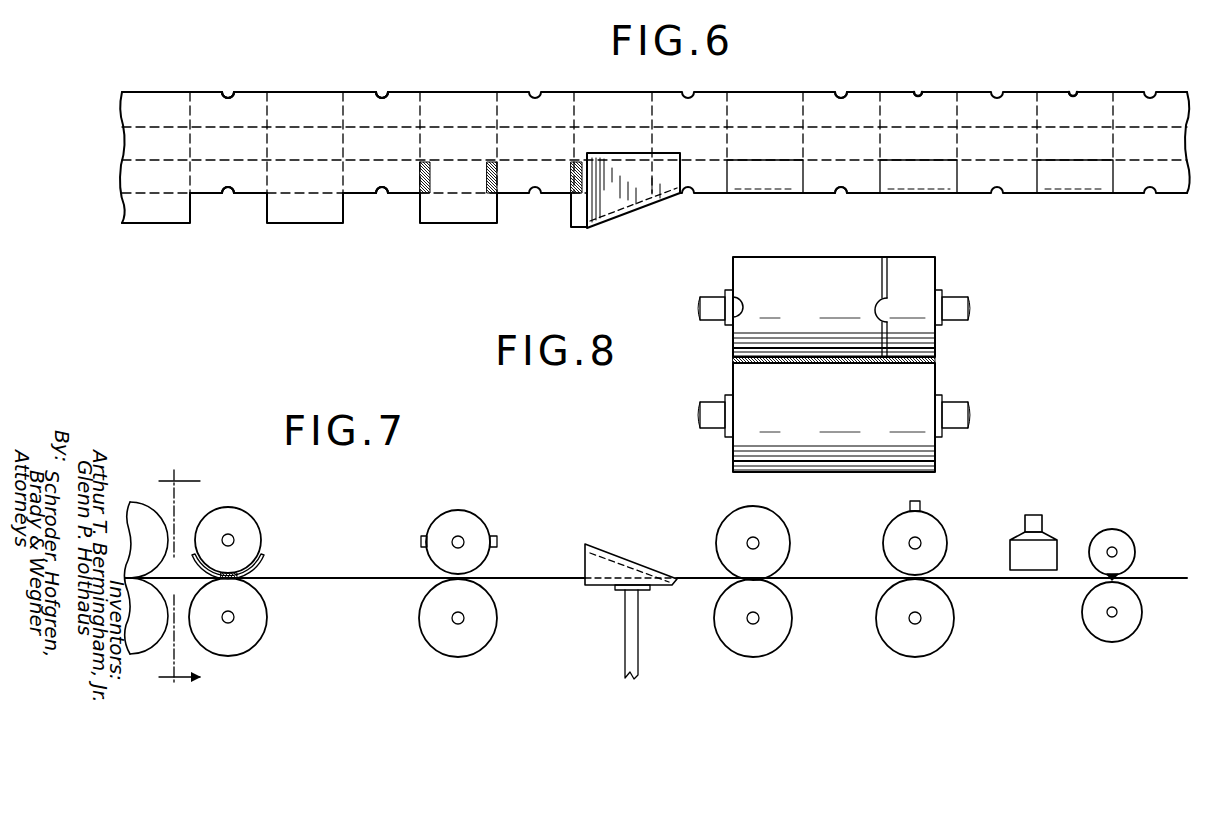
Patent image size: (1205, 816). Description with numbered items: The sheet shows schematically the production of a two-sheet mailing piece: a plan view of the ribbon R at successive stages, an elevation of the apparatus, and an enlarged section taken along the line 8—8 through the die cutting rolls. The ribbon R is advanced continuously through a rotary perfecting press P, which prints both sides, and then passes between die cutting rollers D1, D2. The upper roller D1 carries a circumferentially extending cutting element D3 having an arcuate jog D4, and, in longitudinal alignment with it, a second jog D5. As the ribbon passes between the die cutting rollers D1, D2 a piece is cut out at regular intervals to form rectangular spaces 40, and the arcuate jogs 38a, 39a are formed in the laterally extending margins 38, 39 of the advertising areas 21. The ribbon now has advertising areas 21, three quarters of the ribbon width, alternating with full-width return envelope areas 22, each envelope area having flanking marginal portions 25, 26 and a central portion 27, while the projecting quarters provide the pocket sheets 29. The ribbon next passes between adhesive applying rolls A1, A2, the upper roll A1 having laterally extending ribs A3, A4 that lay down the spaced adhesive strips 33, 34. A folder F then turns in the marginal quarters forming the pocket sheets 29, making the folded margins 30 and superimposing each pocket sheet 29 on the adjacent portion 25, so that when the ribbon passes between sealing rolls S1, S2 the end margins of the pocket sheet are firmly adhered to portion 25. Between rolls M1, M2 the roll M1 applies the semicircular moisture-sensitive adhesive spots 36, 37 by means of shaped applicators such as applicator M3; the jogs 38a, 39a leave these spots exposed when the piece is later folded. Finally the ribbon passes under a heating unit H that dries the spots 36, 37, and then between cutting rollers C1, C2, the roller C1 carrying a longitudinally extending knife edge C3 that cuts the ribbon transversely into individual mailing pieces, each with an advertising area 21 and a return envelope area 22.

In FIG. 6, the ribbon R is at (152, 92).
In FIG. 8, the ribbon R is at (935, 358).
In FIG. 7, the ribbon R is at (313, 577).
In FIG. 6, the advertising area 21 is at (190, 105).
In FIG. 6, the return envelope area 22 is at (285, 105).
In FIG. 6, the marginal portion 25 is at (251, 184).
In FIG. 6, the marginal portion 26 is at (254, 121).
In FIG. 6, the central portion 27 is at (251, 154).
In FIG. 6, the pocket sheet 29 is at (293, 215).
In FIG. 6, the folded margin 30 is at (770, 194).
In FIG. 6, the adhesive strip 33 is at (425, 163).
In FIG. 6, the adhesive strip 34 is at (490, 163).
In FIG. 6, the moisture-sensitive adhesive area 36 is at (918, 194).
In FIG. 6, the moisture-sensitive adhesive area 37 is at (918, 91).
In FIG. 6, the laterally extending margin 38 is at (254, 196).
In FIG. 6, the jog 38a is at (229, 197).
In FIG. 6, the laterally extending margin 39 is at (238, 90).
In FIG. 6, the jog 39a is at (228, 88).
In FIG. 6, the rectangular space 40 is at (198, 215).
In FIG. 6, the folder F is at (617, 208).
In FIG. 7, the folder F is at (612, 548).
In FIG. 7, the rotary perfecting press P is at (148, 500).
In FIG. 7, the section line 8— 8 is at (179, 580).
In FIG. 8, the die cutting roller D1 is at (935, 262).
In FIG. 7, the die cutting roller D1 is at (245, 516).
In FIG. 8, the die cutting roller D2 is at (935, 380).
In FIG. 7, the die cutting roller D2 is at (265, 638).
In FIG. 8, the cutting element D3 is at (882, 278).
In FIG. 7, the cutting element D3 is at (264, 556).
In FIG. 8, the arcuate jog D4 is at (876, 304).
In FIG. 7, the arcuate jog D4 is at (233, 572).
In FIG. 8, the second jog D5 is at (790, 280).
In FIG. 7, the adhesive applying roll A1 is at (478, 517).
In FIG. 7, the adhesive applying roll A2 is at (497, 618).
In FIG. 7, the adhesive applying rib A3 is at (497, 541).
In FIG. 7, the adhesive applying rib A4 is at (421, 541).
In FIG. 7, the sealing roll S1 is at (772, 517).
In FIG. 7, the sealing roll S2 is at (781, 650).
In FIG. 7, the roll M1 is at (938, 522).
In FIG. 7, the roll M2 is at (955, 618).
In FIG. 7, the adhesive applicator M3 is at (910, 505).
In FIG. 7, the heating unit H is at (1045, 535).
In FIG. 7, the cutting roller C1 is at (1122, 531).
In FIG. 7, the cutting roller C2 is at (1142, 612).
In FIG. 7, the knife edge C3 is at (1117, 577).